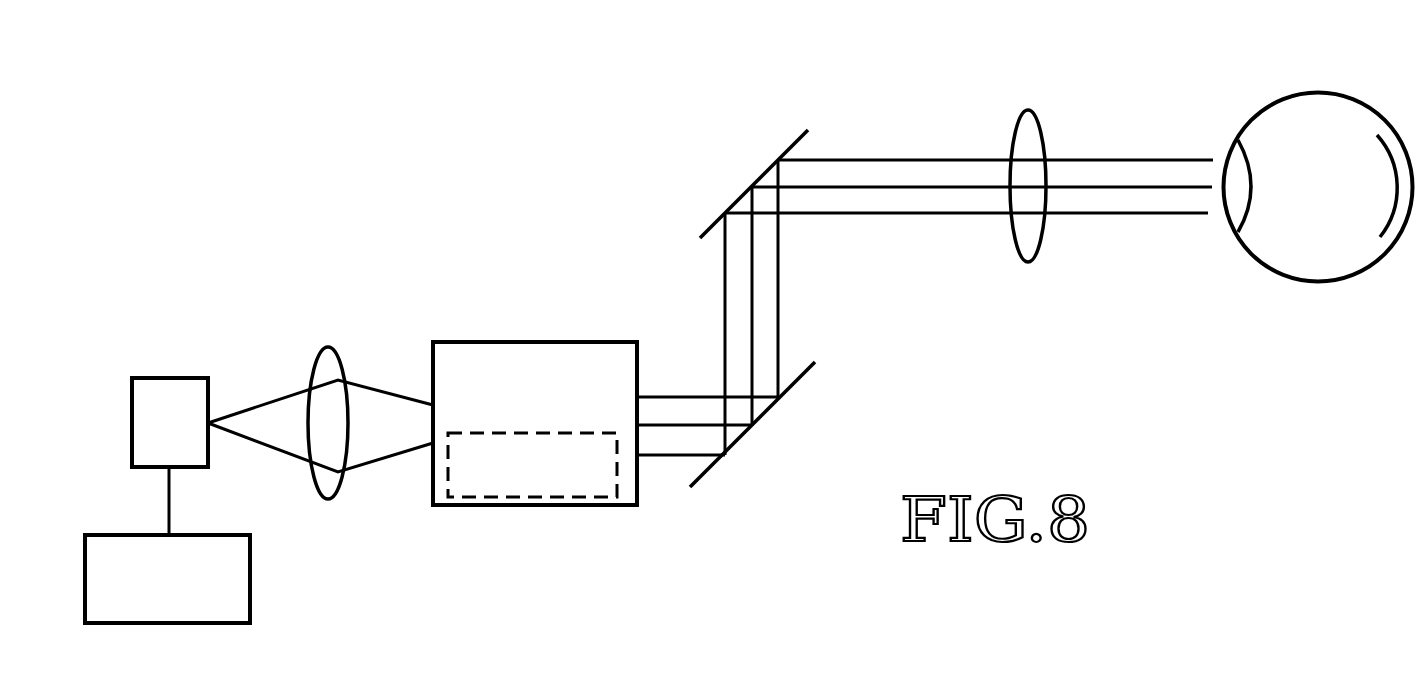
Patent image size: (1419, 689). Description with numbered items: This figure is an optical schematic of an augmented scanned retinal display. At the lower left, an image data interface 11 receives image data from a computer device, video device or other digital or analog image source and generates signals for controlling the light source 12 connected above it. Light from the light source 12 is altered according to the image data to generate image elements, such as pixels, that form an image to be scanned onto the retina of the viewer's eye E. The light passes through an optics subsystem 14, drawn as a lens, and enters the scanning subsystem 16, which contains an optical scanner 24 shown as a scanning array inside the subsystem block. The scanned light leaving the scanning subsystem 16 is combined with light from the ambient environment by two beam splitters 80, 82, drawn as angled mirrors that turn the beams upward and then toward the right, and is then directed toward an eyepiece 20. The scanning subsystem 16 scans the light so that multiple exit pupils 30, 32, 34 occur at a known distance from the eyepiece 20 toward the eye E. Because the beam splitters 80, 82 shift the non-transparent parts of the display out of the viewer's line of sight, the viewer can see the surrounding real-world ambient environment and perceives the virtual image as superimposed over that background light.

The image data interface 11 is at (240, 624).
The light source 12 is at (191, 378).
The optics subsystem 14 is at (340, 358).
The scanning subsystem 16 is at (473, 342).
The eyepiece 20 is at (1035, 110).
The optical scanner 24 is at (600, 497).
The exit pupil 30 is at (1117, 160).
The exit pupil 32 is at (1163, 187).
The exit pupil 34 is at (1138, 213).
The beam splitter 80 is at (815, 362).
The beam splitter 82 is at (790, 143).
The eye E is at (1347, 98).